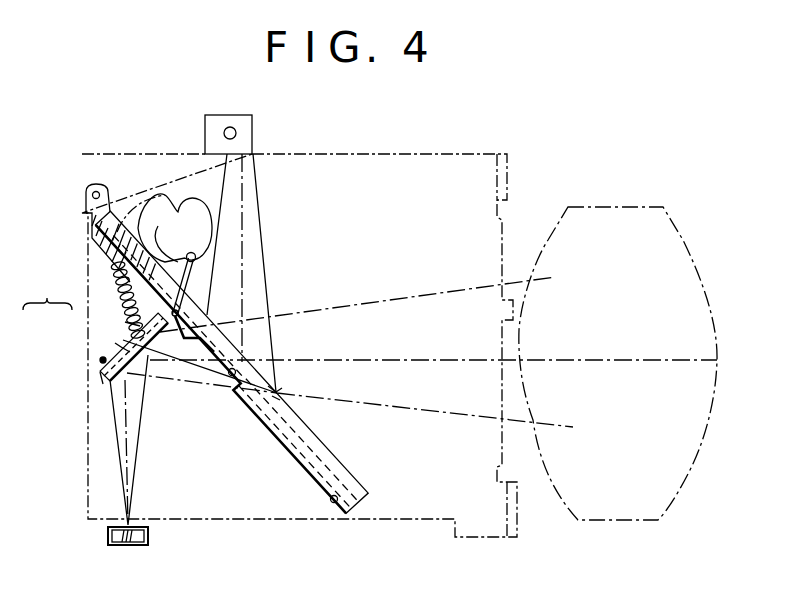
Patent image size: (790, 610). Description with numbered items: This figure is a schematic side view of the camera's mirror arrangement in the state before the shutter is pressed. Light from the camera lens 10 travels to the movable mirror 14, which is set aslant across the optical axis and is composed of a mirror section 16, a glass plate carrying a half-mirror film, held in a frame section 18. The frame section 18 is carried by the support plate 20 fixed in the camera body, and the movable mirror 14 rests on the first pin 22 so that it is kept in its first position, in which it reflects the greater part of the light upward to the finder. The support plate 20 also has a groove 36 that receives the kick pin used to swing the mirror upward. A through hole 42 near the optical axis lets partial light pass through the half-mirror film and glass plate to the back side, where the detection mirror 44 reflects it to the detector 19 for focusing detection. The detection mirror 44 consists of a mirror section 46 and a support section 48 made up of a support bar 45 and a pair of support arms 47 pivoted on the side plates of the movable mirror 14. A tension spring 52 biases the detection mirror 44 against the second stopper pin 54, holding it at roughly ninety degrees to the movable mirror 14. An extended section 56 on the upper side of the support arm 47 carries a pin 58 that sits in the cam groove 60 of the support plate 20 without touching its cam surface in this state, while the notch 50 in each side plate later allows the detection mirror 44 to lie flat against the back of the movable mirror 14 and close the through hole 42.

The camera lens 10 is at (689, 244).
The movable mirror 14 is at (363, 466).
The mirror section 16 is at (322, 466).
The frame section 18 is at (286, 452).
The detector 19 is at (128, 545).
The support plate 20 is at (444, 154).
The first pin 22 is at (334, 503).
The groove 36 is at (148, 195).
The through hole 42 is at (278, 392).
The detection mirror 44 is at (150, 352).
The support bar 45 is at (115, 343).
The mirror section 46 is at (103, 385).
The support arm 47 is at (125, 322).
The support section 48 is at (47, 293).
The notch 50 is at (230, 377).
The tension spring 52 is at (120, 213).
The second stopper pin 54 is at (99, 361).
The extended section 56 is at (184, 272).
The pin 58 is at (198, 256).
The cam groove 60 is at (178, 208).